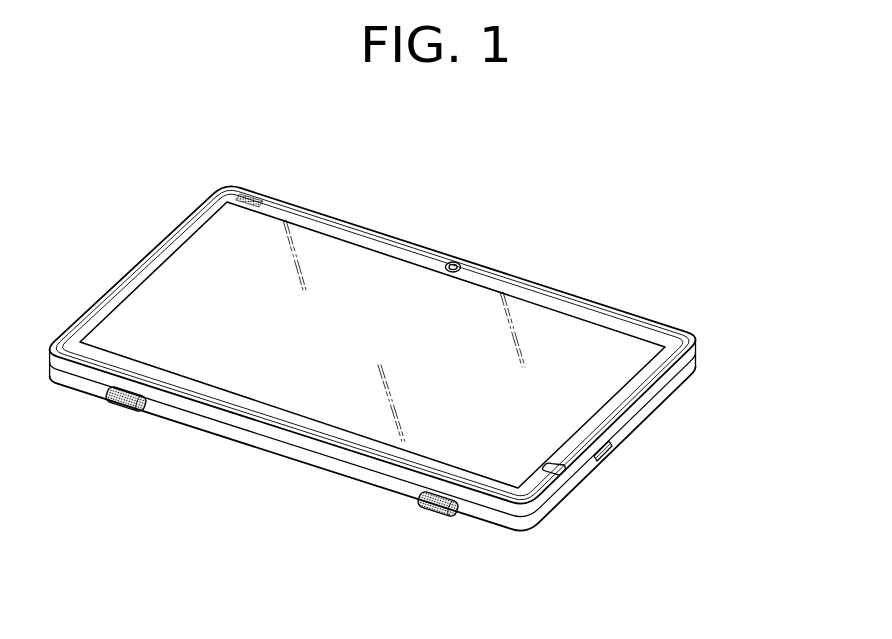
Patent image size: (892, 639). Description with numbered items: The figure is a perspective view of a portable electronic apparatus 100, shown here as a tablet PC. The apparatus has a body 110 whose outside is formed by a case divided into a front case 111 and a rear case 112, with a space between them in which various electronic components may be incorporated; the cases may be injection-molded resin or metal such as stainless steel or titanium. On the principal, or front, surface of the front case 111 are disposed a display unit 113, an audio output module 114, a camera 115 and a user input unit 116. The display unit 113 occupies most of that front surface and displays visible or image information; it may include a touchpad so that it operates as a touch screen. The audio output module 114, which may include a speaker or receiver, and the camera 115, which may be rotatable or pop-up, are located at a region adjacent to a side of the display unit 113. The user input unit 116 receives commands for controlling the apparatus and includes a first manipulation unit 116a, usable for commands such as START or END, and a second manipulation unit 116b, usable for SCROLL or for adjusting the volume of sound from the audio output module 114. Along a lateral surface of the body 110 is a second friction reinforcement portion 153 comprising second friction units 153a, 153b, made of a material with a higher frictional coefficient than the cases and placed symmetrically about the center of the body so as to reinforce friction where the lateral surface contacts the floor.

The portable electronic apparatus 100 is at (126, 203).
The body 110 is at (792, 313).
The front case 111 is at (705, 350).
The rear case 112 is at (703, 372).
The display unit 113 is at (610, 343).
The audio output module 114 is at (262, 198).
The camera 115 is at (455, 261).
The user input unit 116 is at (740, 463).
The first manipulation unit 116a is at (558, 470).
The second manipulation unit 116b is at (597, 453).
The second friction reinforcement portion 153 is at (372, 581).
The second friction unit 153a is at (130, 408).
The second friction unit 153b is at (432, 502).